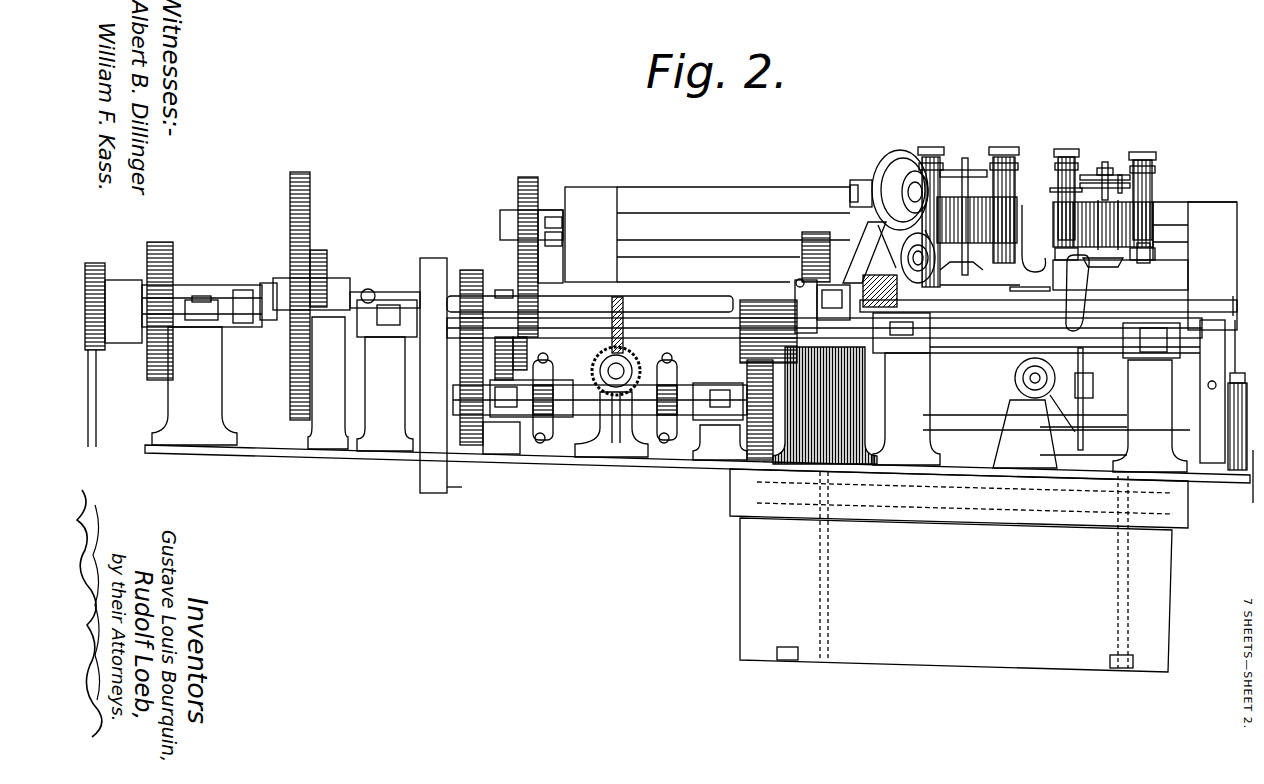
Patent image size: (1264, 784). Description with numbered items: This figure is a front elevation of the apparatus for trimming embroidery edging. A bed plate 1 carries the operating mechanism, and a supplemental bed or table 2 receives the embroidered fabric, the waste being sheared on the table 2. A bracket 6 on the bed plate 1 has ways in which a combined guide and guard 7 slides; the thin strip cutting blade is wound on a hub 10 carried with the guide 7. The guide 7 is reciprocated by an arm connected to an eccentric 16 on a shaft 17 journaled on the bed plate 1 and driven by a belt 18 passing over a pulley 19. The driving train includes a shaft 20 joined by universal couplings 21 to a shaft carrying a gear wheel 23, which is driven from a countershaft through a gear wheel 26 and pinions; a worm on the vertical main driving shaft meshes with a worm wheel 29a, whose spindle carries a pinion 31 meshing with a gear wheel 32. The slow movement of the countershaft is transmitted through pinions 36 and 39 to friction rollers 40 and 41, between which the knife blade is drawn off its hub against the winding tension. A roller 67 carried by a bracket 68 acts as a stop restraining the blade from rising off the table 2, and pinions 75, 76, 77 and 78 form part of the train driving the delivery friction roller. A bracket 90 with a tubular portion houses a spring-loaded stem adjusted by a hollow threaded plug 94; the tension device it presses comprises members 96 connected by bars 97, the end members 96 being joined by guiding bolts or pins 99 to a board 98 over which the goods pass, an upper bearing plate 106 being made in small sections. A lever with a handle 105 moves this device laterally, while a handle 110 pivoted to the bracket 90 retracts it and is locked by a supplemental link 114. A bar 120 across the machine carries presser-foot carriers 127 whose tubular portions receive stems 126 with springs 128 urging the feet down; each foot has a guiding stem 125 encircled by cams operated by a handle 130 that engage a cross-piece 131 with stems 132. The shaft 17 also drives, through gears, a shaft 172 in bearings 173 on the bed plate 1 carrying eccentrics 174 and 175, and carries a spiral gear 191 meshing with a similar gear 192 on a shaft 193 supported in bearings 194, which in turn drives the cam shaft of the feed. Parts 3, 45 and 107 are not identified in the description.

The bed plate 1 is at (270, 452).
The supplemental bed or table 2 is at (1238, 304).
The bar 3 is at (978, 284).
The bracket 6 is at (864, 252).
The combined guide and guard 7 is at (961, 259).
The hub 10 is at (912, 150).
The eccentric 16 is at (800, 296).
The shaft 17 is at (968, 338).
The belt 18 is at (464, 486).
The pulley 19 is at (447, 258).
The shaft 20 is at (386, 297).
The universal couplings 21 is at (370, 289).
The gear wheel 23 is at (310, 227).
The gear wheel 26 is at (327, 257).
The worm wheel 29a is at (104, 266).
The pinion 31 is at (150, 320).
The gear wheel 32 is at (173, 272).
The pinion 36 is at (870, 287).
The pinion 39 is at (806, 246).
The friction roller 40 is at (908, 248).
The friction roller 41 is at (949, 306).
The rod 45 is at (1015, 289).
The roller 67 is at (1064, 264).
The bracket 68 is at (1034, 238).
The pinion 75 is at (528, 177).
The pinion 76 is at (543, 210).
The pinion 77 is at (515, 286).
The pinion 78 is at (483, 282).
The bracket 90 is at (1025, 413).
The hollow threaded plug 94 is at (1030, 376).
The members 96 is at (1024, 354).
The bars 97 is at (968, 414).
The board 98 is at (1200, 370).
The guiding bolts or pins 99 is at (1209, 389).
The handle 105 is at (1222, 368).
The upper bearing member or plate 106 is at (1185, 300).
The trough 107 is at (1200, 480).
The handle 110 is at (1076, 406).
The supplemental link 114 is at (1080, 370).
The bar 120 is at (830, 200).
The guiding stem 125 is at (965, 158).
The stems 126 is at (934, 148).
The carrier 127 is at (1153, 180).
The springs 128 is at (1103, 267).
The operating handle 130 is at (1052, 182).
The cross-piece 131 is at (1130, 186).
The stems 132 is at (1121, 175).
The shaft 172 is at (583, 412).
The bearings 173 is at (630, 410).
The eccentric 174 is at (535, 440).
The eccentric 175 is at (662, 442).
The spiral gear 191 is at (622, 297).
The spiral gear 192 is at (622, 366).
The shaft 193 is at (622, 370).
The bearings 194 is at (600, 443).